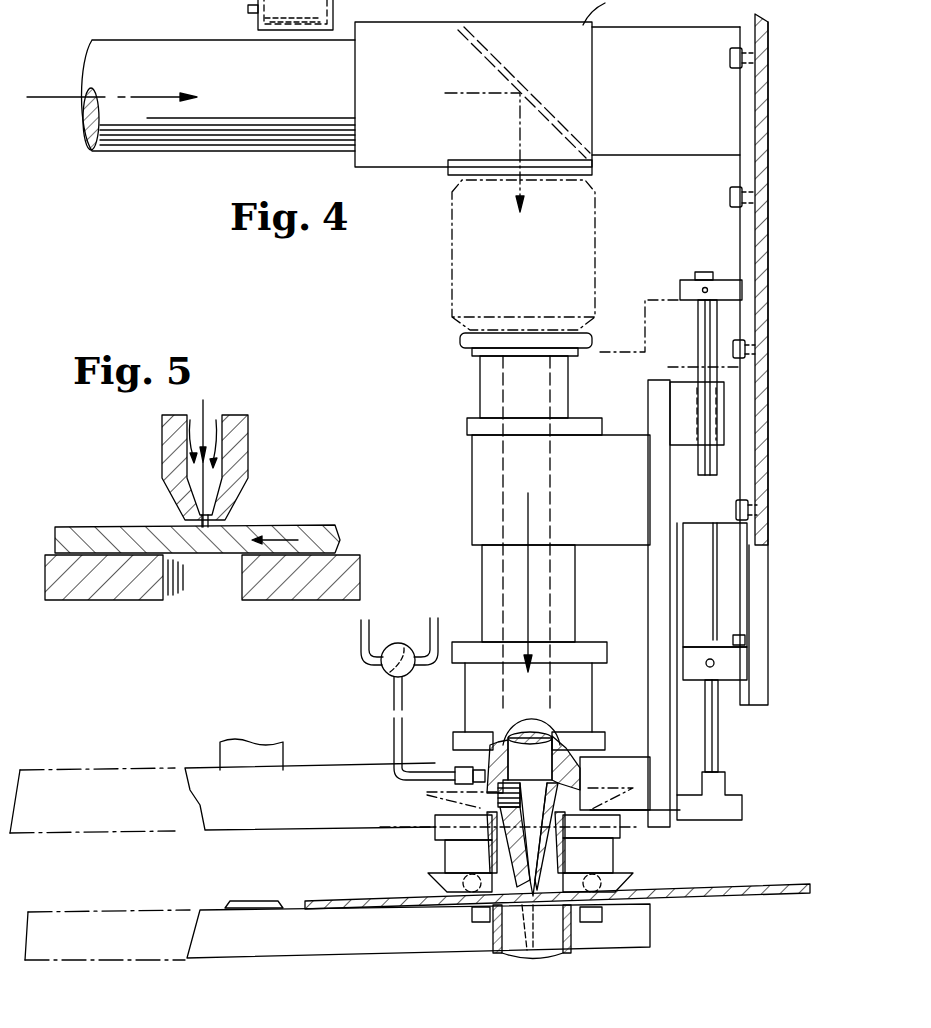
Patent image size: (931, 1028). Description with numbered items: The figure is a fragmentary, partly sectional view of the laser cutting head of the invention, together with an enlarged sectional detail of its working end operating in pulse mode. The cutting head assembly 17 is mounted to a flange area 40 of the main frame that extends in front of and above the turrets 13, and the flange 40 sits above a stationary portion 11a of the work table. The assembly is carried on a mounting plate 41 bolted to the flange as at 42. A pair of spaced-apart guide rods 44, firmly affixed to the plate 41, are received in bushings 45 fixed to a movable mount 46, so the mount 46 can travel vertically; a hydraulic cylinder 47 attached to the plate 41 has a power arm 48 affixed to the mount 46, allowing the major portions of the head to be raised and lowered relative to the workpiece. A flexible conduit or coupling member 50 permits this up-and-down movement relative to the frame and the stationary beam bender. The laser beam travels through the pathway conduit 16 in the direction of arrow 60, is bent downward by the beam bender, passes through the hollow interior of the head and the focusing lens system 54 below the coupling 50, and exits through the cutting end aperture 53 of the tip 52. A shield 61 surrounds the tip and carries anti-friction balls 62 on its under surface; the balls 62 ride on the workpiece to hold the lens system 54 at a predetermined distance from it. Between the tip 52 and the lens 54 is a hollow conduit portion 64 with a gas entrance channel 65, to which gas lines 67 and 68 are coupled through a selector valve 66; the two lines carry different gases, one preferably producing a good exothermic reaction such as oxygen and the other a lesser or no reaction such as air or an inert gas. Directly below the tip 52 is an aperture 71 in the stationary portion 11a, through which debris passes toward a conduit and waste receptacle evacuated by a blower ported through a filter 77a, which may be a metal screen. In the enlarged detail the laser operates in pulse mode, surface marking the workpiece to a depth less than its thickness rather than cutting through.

In FIG. 4, the stationary portion of the work table 11a is at (715, 903).
In FIG. 4, the turrets 13 is at (200, 780).
In FIG. 4, the pathway conduit 16 is at (243, 147).
In FIG. 4, the cutting head assembly 17 is at (464, 454).
In FIG. 4, the flange area 40 is at (765, 30).
In FIG. 4, the mounting plate 41 is at (750, 256).
In FIG. 4, the bolts 42 is at (742, 70).
In FIG. 4, the guide rods 44 is at (698, 372).
In FIG. 4, the bushings 45 is at (723, 425).
In FIG. 4, the movable mount 46 is at (655, 465).
In FIG. 4, the hydraulic cylinder 47 is at (728, 595).
In FIG. 4, the power arm 48 is at (718, 738).
In FIG. 4, the flexible conduit or coupling member 50 is at (452, 283).
In FIG. 4, the tip 52 is at (548, 862).
In FIG. 5, the tip 52 is at (162, 460).
In FIG. 4, the cutting end aperture 53 is at (538, 898).
In FIG. 5, the cutting end aperture 53 is at (190, 510).
In FIG. 4, the focusing lens system 54 is at (560, 745).
In FIG. 4, the arrow indicating laser beam direction 60 is at (50, 96).
In FIG. 4, the shield 61 is at (453, 855).
In FIG. 4, the anti-friction balls 62 is at (600, 890).
In FIG. 4, the hollow conduit portion 64 is at (495, 740).
In FIG. 4, the gas entrance channel 65 is at (487, 760).
In FIG. 4, the selector valve 66 is at (385, 670).
In FIG. 4, the gas line 67 is at (364, 630).
In FIG. 4, the gas line 68 is at (437, 625).
In FIG. 4, the aperture 71 is at (507, 912).
In FIG. 5, the aperture 71 is at (178, 600).
In FIG. 4, the filter 77a is at (248, 10).